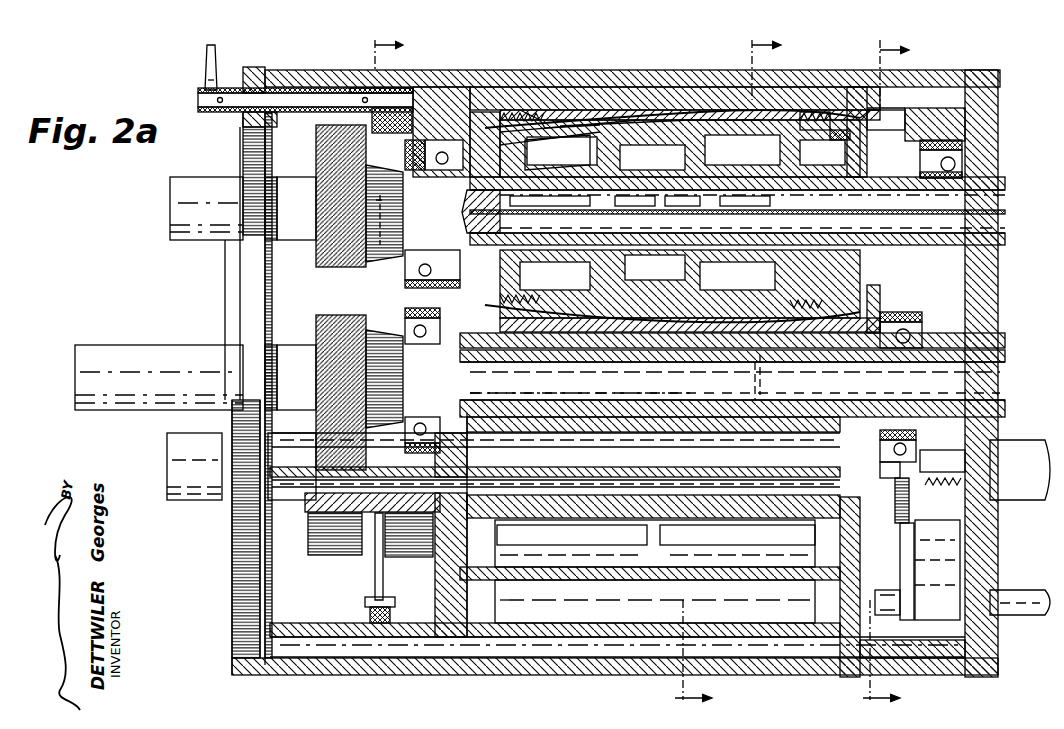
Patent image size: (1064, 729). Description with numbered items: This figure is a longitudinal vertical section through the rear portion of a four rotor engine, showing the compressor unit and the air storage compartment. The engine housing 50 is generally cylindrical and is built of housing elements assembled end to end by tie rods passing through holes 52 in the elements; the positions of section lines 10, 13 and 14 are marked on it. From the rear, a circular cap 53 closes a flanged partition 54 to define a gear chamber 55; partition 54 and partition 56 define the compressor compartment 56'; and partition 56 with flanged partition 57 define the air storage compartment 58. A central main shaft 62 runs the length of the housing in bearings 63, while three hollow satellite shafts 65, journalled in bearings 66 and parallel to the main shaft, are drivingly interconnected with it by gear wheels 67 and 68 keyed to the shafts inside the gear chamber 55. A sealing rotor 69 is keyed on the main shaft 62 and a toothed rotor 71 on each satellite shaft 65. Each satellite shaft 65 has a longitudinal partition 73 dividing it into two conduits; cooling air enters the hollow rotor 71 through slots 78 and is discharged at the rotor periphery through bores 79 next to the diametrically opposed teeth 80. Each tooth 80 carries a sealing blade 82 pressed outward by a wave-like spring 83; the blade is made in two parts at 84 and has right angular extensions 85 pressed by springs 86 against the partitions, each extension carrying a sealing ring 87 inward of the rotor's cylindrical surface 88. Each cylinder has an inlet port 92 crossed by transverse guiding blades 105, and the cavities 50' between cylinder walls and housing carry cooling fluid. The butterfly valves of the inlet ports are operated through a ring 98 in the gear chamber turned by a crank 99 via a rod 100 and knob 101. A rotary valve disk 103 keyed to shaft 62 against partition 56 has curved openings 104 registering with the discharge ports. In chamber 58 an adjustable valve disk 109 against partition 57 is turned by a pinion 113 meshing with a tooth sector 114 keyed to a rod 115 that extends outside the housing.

The section line 10 is at (728, 371).
The section line 13 is at (886, 371).
The section line 14 is at (388, 142).
The engine housing 50 is at (682, 107).
The cavities 50' is at (565, 545).
The holes 52 is at (300, 478).
The circular cap 53 is at (250, 258).
The flanged partition 54 is at (432, 82).
The gear chamber 55 is at (290, 282).
The partition 56 is at (842, 107).
The compressor compartment 56' is at (675, 74).
The flanged partition 57 is at (975, 70).
The air storage compartment 58 is at (922, 105).
The main shaft 62 is at (1005, 358).
The bearings 63 is at (410, 322).
The satellite shafts 65 is at (190, 203).
The bearings 66 is at (963, 158).
The gear wheels 67 is at (335, 320).
The gear wheels 68 is at (275, 112).
The sealing rotor 69 is at (515, 416).
The toothed rotor 71 is at (480, 130).
The partition 73 is at (860, 220).
The slots 78 is at (740, 205).
The bores 79 is at (580, 145).
The teeth 80 is at (565, 310).
The sealing blade 82 is at (568, 100).
The wave-like spring 83 is at (640, 110).
The sealing blade parts 84 is at (700, 107).
The right angular extensions 85 is at (497, 115).
The springs 86 is at (860, 120).
The sealing ring 87 is at (852, 136).
The peripheral cylindrical surface 88 is at (770, 368).
The inlet port 92 is at (745, 560).
The ring 98 is at (375, 573).
The crank 99 is at (345, 110).
The rod 100 is at (282, 100).
The knob 101 is at (216, 60).
The rotary valve disk 103 is at (875, 330).
The curved openings 104 is at (905, 466).
The transverse guiding blades 105 is at (608, 548).
The valve disk 109 is at (915, 462).
The pinion 113 is at (898, 515).
The tooth sector 114 is at (915, 544).
The rod 115 is at (1022, 615).